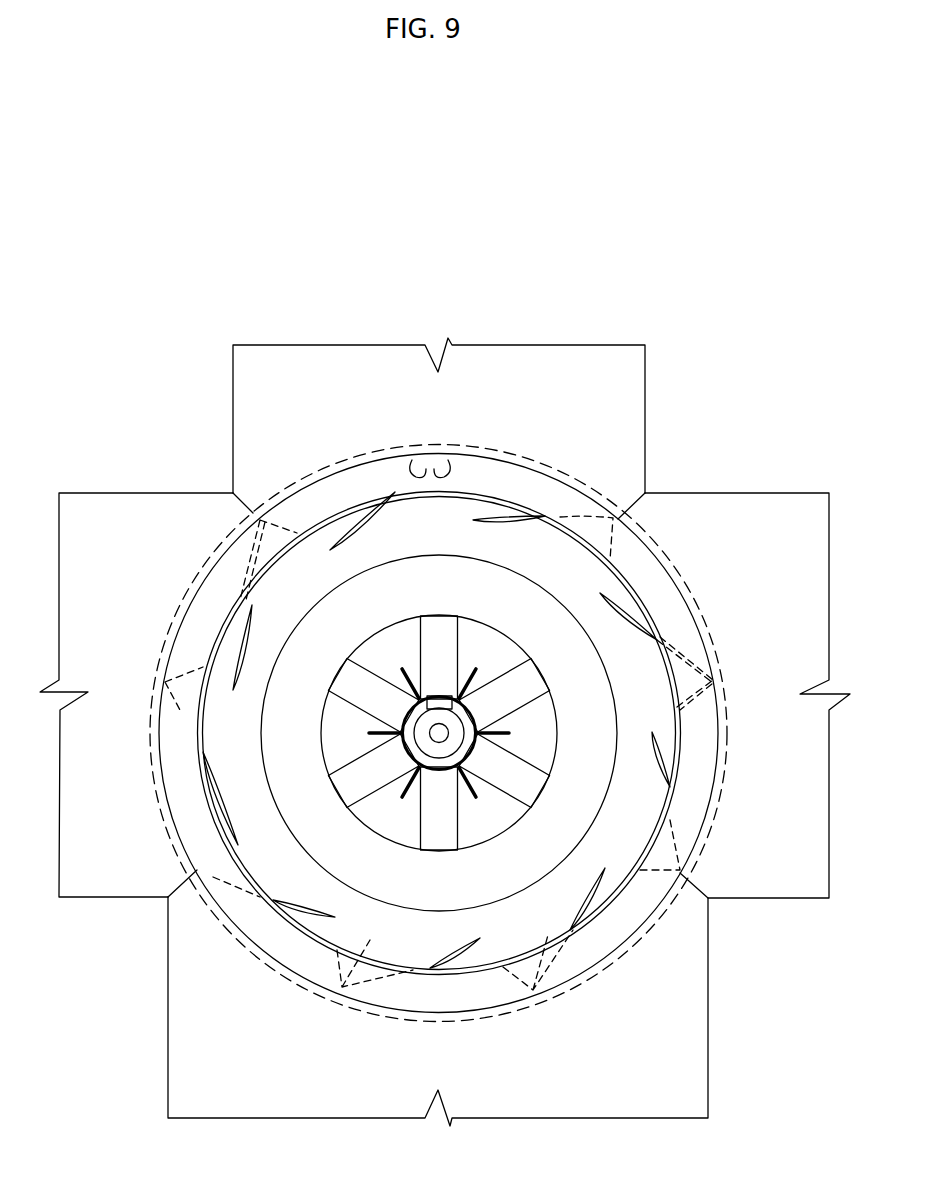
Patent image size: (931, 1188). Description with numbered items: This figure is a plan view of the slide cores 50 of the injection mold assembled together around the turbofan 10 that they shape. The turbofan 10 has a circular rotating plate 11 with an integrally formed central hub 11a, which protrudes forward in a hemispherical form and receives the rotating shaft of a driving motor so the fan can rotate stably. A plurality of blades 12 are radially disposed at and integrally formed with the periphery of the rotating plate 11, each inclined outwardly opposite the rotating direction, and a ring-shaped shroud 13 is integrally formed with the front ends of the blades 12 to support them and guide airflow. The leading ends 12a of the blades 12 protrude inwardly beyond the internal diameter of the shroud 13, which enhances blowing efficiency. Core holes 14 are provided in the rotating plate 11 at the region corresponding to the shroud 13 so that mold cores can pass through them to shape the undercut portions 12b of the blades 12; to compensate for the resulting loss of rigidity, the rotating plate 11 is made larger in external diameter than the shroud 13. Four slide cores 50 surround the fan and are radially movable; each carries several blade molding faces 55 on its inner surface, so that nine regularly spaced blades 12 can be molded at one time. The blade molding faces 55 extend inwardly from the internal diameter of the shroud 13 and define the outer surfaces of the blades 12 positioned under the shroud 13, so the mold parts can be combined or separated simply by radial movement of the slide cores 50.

The turbofan 10 is at (605, 493).
The circular rotating plate 11 is at (548, 470).
The central hub 11a is at (478, 762).
The blades 12 is at (246, 553).
The leading ends 12a is at (242, 648).
The undercut portions 12b is at (418, 468).
The ring-shaped shroud 13 is at (182, 607).
The core holes 14 is at (446, 468).
The slide cores 50 is at (98, 508).
The blade molding faces 55 is at (480, 520).